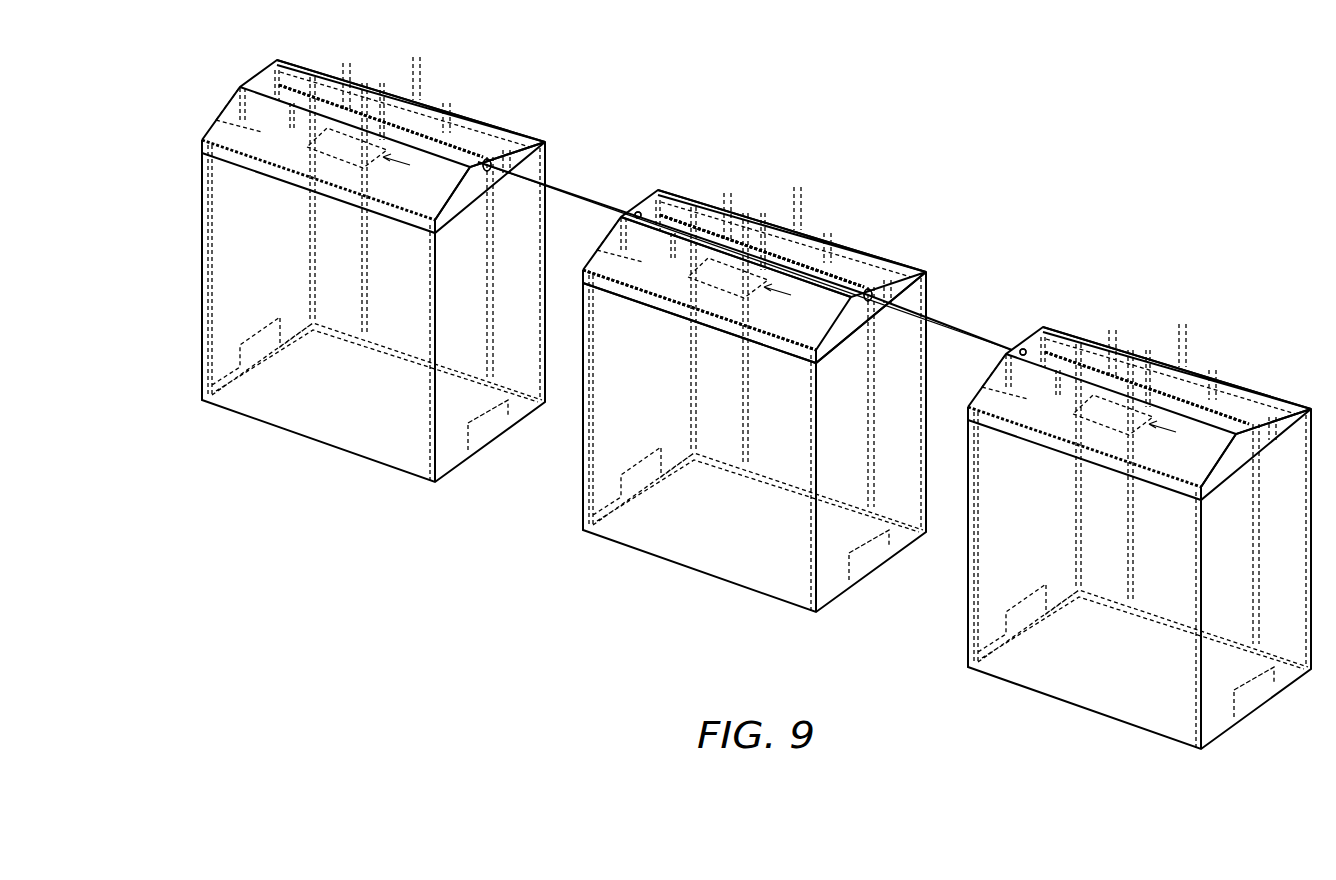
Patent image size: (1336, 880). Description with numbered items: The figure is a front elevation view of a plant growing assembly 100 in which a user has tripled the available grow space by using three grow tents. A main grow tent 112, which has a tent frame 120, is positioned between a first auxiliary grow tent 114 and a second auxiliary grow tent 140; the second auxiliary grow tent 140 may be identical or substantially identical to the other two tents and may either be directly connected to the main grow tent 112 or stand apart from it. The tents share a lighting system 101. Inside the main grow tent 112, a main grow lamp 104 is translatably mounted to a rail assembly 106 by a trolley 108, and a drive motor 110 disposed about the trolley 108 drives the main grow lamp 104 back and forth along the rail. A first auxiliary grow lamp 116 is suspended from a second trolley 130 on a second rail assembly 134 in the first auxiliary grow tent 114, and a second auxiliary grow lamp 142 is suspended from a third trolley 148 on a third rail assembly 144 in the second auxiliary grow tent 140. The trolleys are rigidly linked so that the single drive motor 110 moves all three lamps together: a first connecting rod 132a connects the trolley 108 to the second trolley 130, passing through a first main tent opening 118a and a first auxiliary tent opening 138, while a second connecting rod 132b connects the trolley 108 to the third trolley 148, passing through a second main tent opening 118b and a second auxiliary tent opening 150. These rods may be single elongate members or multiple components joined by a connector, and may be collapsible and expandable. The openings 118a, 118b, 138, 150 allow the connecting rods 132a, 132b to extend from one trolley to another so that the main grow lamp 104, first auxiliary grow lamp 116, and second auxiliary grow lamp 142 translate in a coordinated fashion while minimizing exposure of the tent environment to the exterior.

The plant growing assembly 100 is at (1150, 250).
The lighting system 101 is at (838, 272).
The main grow lamp 104 is at (806, 265).
The rail assembly 106 is at (675, 200).
The trolley 108 is at (736, 255).
The drive motor 110 is at (762, 251).
The main grow tent 112 is at (583, 510).
The first auxiliary grow tent 114 is at (968, 647).
The first auxiliary grow lamp 116 is at (1240, 380).
The first main tent opening 118a is at (876, 292).
The second main tent opening 118b is at (642, 210).
The tent frame 120 is at (601, 319).
The second trolley 130 is at (1118, 368).
The first connecting rod 132a is at (957, 330).
The second connecting rod 132b is at (622, 214).
The second rail assembly 134 is at (1058, 342).
The first auxiliary tent opening 138 is at (1030, 343).
The second auxiliary grow tent 140 is at (202, 386).
The second auxiliary grow lamp 142 is at (468, 140).
The third rail assembly 144 is at (300, 65).
The third trolley 148 is at (354, 95).
The second auxiliary tent opening 150 is at (498, 162).